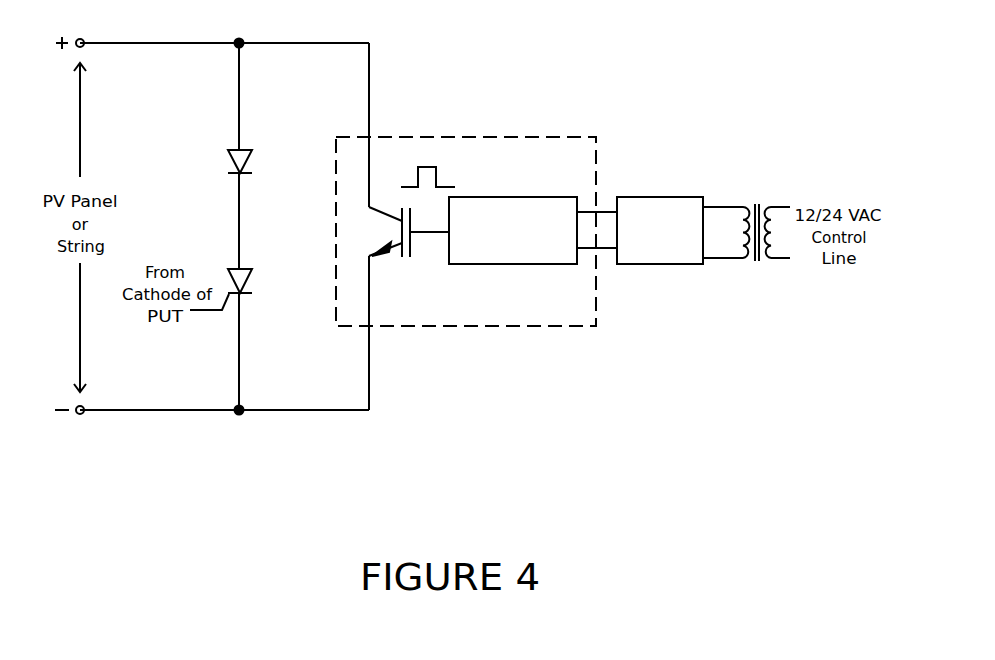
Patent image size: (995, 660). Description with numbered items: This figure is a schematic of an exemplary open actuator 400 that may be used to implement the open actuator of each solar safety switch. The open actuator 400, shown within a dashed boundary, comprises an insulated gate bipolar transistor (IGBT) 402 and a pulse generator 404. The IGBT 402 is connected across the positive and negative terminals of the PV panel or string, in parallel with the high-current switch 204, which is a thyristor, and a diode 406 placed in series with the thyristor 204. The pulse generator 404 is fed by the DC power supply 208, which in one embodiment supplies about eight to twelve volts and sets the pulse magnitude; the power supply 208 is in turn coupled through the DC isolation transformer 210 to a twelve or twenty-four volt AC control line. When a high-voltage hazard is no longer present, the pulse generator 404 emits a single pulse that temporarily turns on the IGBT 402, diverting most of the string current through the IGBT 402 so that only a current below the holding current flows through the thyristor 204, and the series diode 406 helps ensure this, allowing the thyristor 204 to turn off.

The high-current switch 204 is at (263, 275).
The power supply 208 is at (660, 193).
The DC isolation transformer 210 is at (753, 268).
The open actuator 400 is at (468, 132).
The insulated gate bipolar transistor (IGBT) 402 is at (398, 266).
The pulse generator 404 is at (513, 192).
The diode 406 is at (262, 162).